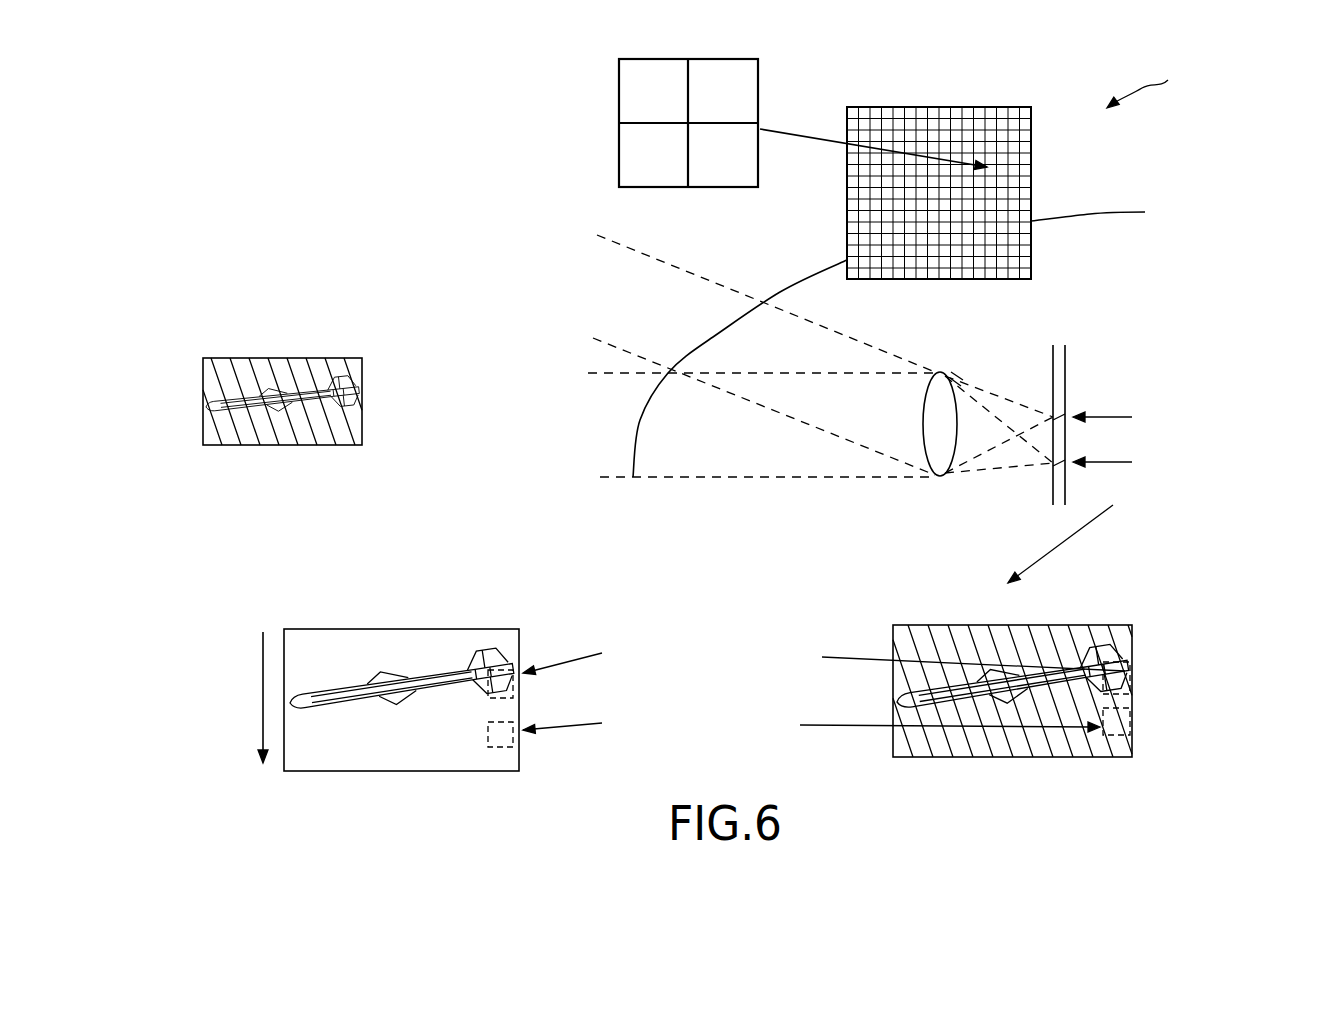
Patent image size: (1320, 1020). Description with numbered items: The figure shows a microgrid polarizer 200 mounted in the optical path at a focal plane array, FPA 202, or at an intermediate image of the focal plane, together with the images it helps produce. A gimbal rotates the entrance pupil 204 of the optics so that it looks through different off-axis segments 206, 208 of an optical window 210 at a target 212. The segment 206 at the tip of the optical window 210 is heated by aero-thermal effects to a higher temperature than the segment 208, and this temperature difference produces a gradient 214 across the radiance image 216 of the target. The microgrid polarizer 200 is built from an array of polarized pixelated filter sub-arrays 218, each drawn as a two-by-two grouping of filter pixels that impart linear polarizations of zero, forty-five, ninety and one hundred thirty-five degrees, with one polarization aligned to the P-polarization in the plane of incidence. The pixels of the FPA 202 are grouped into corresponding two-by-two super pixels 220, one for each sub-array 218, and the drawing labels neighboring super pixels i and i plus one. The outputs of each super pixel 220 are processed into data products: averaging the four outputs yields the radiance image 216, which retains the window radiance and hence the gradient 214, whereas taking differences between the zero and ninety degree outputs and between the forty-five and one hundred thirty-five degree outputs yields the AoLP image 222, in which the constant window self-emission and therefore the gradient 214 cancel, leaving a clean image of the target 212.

The microgrid polarizer 200 is at (1148, 82).
The FPA 202 is at (1067, 345).
The entrance pupil 204 is at (923, 424).
The off-axis segment 206 is at (638, 426).
The off-axis segment 208 is at (710, 337).
The optical window 210 is at (847, 236).
The target 212 is at (305, 358).
The gradient 214 is at (262, 695).
The radiance image 216 is at (347, 629).
The polarized pixelated filter sub-array 218 is at (619, 152).
The super pixel 220 is at (1103, 417).
The AoLP image 222 is at (1003, 757).